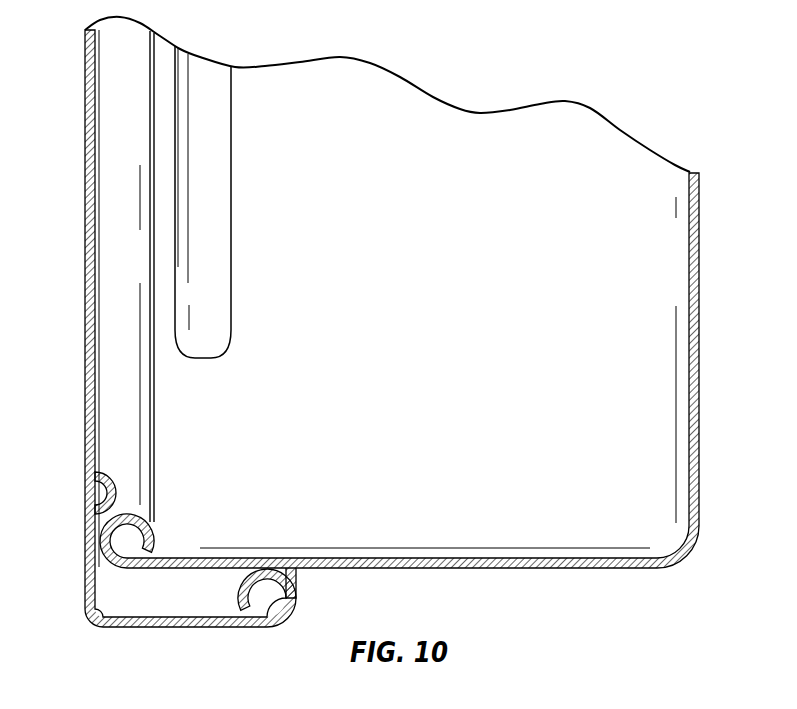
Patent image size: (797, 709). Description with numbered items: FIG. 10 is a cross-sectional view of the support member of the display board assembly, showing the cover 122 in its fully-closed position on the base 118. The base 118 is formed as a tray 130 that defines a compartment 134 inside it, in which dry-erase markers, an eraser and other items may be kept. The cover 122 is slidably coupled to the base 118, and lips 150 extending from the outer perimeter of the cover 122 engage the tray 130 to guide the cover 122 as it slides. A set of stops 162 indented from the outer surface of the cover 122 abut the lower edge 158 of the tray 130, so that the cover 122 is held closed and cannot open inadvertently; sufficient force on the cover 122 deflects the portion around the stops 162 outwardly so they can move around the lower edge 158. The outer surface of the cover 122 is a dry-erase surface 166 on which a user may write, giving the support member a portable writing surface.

The compartment 134 is at (415, 155).
The dry-erase surface 166 is at (85, 275).
The base 118 is at (700, 280).
The tray 130 is at (655, 568).
The stops 162 is at (115, 482).
The lower edge 158 is at (105, 570).
The cover 122 is at (113, 630).
The lips 150 is at (193, 630).